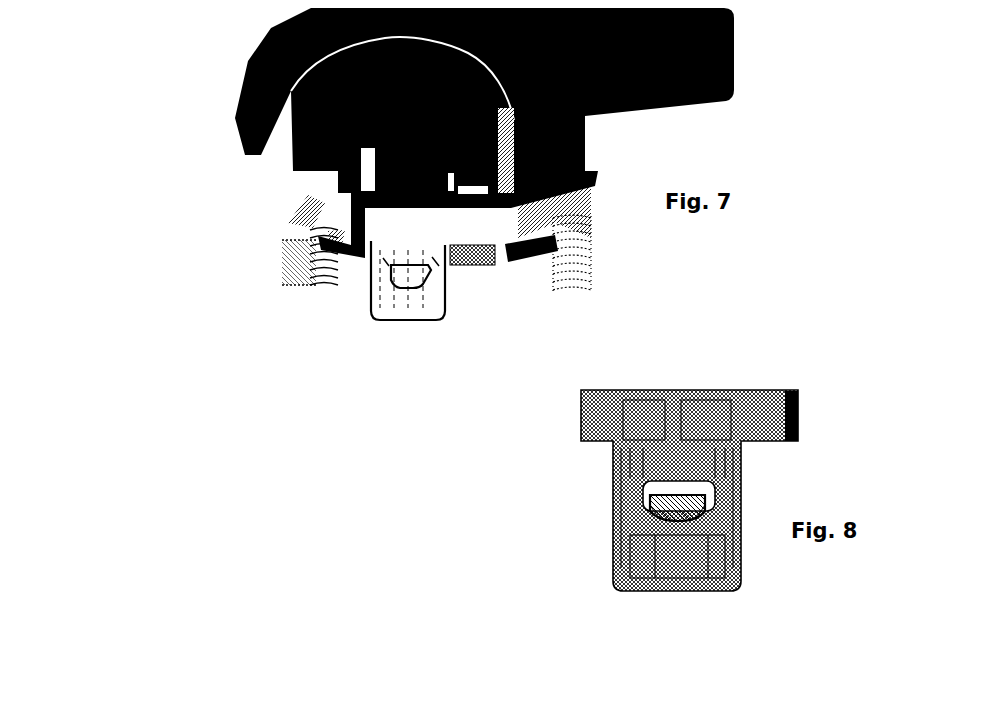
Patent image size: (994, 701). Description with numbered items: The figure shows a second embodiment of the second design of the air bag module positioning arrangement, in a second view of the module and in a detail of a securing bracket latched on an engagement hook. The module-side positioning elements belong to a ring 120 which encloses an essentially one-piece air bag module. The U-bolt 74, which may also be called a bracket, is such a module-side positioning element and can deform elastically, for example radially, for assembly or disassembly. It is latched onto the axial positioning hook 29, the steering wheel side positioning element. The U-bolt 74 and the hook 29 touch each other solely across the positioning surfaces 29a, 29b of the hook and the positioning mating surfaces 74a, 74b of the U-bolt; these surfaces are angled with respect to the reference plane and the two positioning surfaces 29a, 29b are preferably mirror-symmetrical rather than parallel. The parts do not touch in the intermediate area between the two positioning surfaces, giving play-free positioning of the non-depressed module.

In FIG. 7, the ring 120 is at (333, 217).
In FIG. 7, the U-bolt 74 is at (380, 287).
In FIG. 8, the U-bolt 74 is at (633, 558).
In FIG. 8, the positioning mating surface 74a is at (698, 490).
In FIG. 8, the positioning mating surface 74b is at (648, 490).
In FIG. 8, the axial positioning hook 29 is at (677, 518).
In FIG. 8, the positioning surface 29a is at (693, 510).
In FIG. 8, the positioning surface 29b is at (643, 510).